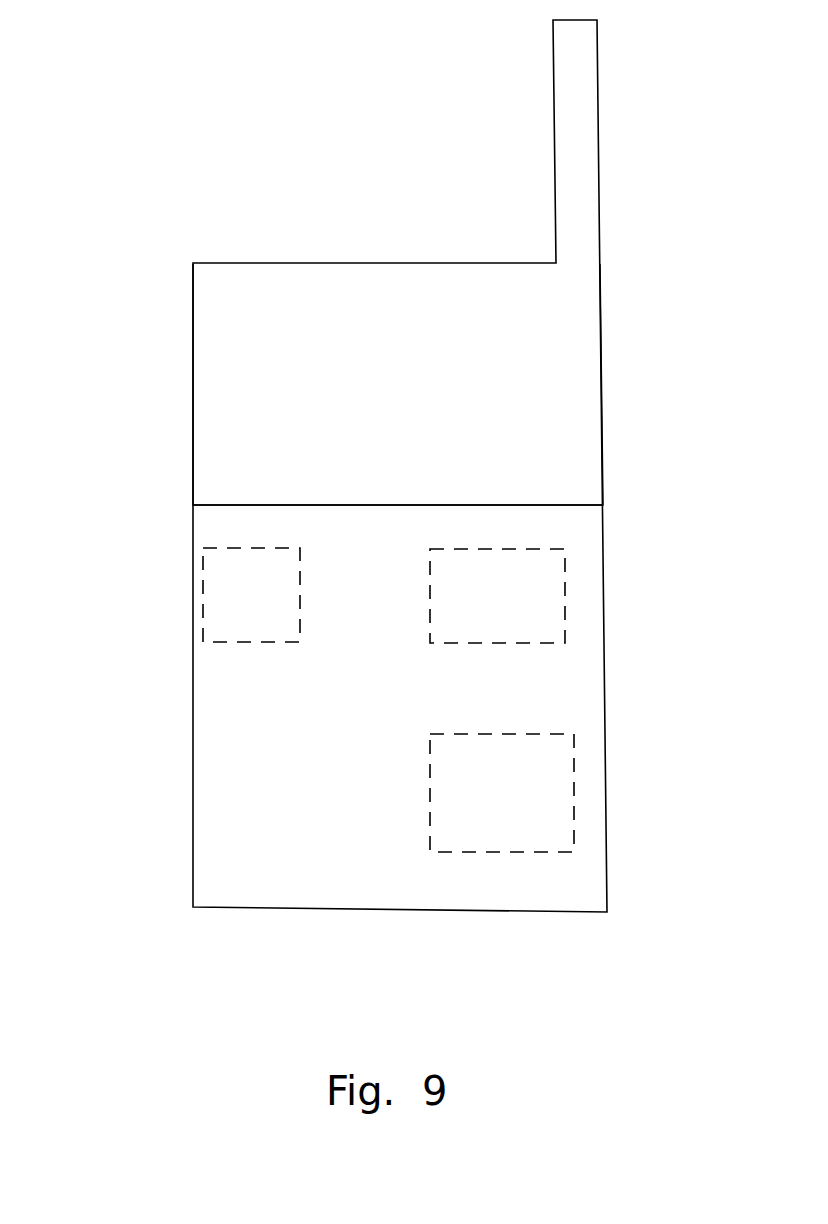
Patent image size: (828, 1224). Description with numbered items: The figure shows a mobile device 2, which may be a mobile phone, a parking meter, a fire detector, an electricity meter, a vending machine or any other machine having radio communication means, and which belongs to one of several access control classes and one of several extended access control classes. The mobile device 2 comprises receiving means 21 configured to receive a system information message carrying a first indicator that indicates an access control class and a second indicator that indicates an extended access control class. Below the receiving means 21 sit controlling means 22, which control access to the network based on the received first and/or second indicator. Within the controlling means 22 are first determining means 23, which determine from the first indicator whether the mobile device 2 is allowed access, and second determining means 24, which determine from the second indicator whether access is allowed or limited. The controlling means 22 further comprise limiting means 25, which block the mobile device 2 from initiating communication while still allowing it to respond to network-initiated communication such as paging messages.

The mobile device 2 is at (77, 93).
The receiving means 21 is at (652, 368).
The controlling means 22 is at (643, 585).
The first determining means 23 is at (205, 588).
The second determining means 24 is at (643, 668).
The limiting means 25 is at (643, 760).